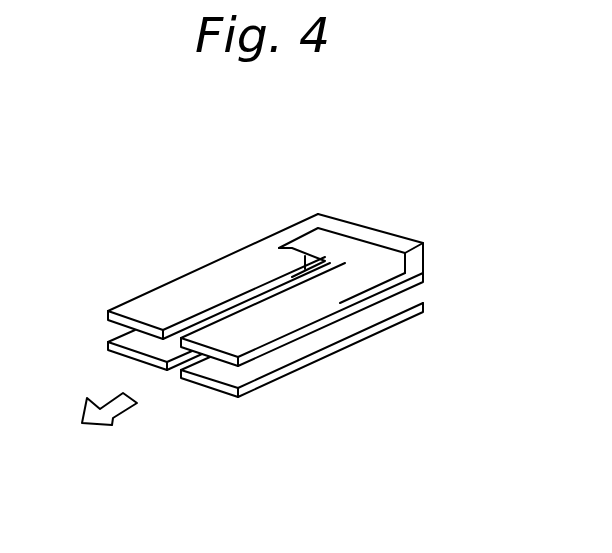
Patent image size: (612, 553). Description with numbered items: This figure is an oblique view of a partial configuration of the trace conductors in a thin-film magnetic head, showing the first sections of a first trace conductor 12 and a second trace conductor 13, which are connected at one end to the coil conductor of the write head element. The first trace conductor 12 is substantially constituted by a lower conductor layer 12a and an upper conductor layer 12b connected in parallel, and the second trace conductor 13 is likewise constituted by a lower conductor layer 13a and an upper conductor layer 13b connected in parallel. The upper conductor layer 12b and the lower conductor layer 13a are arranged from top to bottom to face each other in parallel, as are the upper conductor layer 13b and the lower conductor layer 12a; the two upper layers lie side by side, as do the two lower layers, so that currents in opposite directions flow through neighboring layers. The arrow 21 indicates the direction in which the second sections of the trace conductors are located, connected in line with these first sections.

The first trace conductor 12 is at (230, 167).
The lower conductor layer of the first trace conductor 12a is at (160, 306).
The upper conductor layer of the first trace conductor 12b is at (338, 318).
The second trace conductor 13 is at (395, 370).
The lower conductor layer of the second trace conductor 13a is at (282, 322).
The upper conductor layer of the second trace conductor 13b is at (150, 348).
The arrow 21 is at (123, 405).